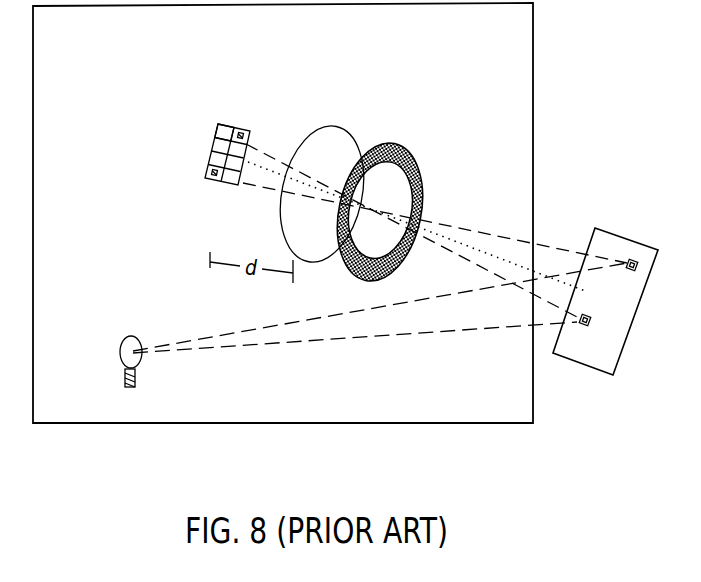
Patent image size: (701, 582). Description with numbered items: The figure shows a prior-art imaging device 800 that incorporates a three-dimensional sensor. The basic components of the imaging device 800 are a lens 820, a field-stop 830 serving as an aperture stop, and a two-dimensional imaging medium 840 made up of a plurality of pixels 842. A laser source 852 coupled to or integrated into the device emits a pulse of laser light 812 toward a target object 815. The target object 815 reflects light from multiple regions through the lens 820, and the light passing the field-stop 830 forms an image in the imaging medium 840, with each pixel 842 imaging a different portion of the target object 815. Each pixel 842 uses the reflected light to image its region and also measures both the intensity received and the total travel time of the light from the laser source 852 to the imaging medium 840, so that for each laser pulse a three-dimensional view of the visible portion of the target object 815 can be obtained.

The imaging device 800 is at (122, 57).
The two-dimensional imaging medium 840 is at (216, 181).
The pixel 842 is at (234, 126).
The lens 820 is at (351, 124).
The field-stop 830 is at (422, 184).
The target object 815 is at (605, 301).
The laser source 852 is at (138, 363).
The pulse of laser light 812 is at (378, 336).